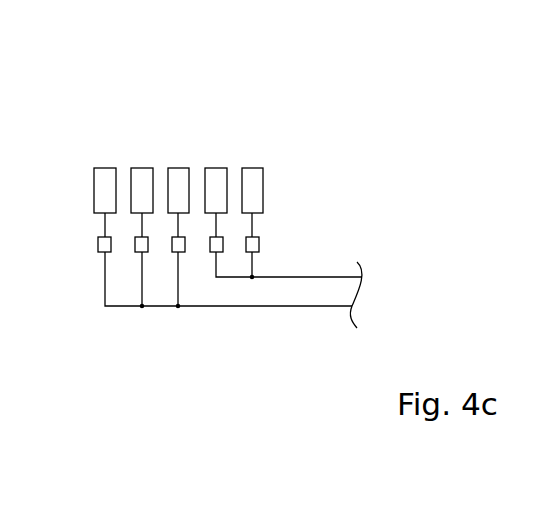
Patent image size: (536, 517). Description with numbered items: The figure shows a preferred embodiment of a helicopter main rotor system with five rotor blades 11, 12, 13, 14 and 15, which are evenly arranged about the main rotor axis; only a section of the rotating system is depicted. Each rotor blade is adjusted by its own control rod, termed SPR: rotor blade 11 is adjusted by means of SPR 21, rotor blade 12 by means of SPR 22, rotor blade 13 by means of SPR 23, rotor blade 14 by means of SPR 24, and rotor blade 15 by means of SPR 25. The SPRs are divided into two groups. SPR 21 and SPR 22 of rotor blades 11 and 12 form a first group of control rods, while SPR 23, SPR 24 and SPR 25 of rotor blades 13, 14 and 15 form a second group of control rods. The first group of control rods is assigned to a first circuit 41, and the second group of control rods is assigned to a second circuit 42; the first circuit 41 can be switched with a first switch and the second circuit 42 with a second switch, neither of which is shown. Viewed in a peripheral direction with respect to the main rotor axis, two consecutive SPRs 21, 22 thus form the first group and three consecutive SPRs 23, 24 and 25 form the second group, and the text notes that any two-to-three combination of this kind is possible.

The rotor blade 11 is at (250, 167).
The rotor blade 12 is at (215, 167).
The rotor blade 13 is at (178, 167).
The rotor blade 14 is at (140, 167).
The rotor blade 15 is at (103, 167).
The SPR 21 is at (261, 242).
The SPR 22 is at (223, 247).
The SPR 23 is at (172, 250).
The SPR 24 is at (135, 250).
The SPR 25 is at (98, 249).
The first circuit 41 is at (331, 275).
The second circuit 42 is at (314, 307).